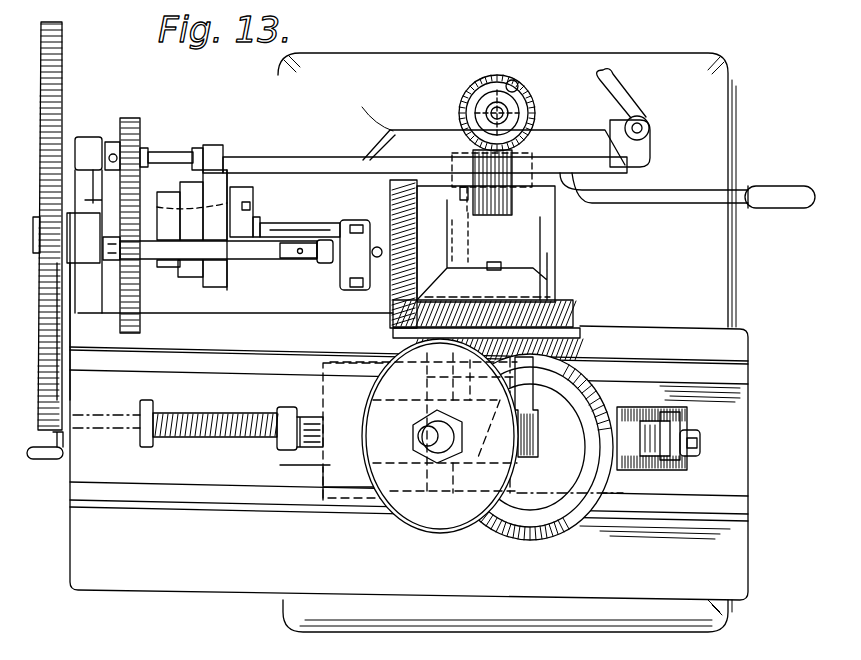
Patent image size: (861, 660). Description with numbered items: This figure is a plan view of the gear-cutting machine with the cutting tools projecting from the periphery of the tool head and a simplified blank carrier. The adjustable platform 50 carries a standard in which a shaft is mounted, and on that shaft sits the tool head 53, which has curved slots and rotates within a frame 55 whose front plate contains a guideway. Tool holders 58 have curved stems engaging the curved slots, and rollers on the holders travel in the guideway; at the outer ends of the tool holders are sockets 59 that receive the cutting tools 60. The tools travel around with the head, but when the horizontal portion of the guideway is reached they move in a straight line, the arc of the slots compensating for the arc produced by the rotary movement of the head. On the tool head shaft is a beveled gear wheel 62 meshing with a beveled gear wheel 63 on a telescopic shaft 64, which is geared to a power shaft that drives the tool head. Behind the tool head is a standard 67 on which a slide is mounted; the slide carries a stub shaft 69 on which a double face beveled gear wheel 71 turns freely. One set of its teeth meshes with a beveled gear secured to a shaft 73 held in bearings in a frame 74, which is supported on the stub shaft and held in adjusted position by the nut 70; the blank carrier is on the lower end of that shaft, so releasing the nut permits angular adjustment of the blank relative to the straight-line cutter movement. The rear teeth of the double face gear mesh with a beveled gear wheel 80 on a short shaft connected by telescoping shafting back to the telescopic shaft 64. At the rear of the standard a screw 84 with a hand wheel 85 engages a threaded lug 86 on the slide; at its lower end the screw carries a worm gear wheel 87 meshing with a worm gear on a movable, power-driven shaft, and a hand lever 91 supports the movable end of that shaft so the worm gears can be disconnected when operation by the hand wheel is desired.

The adjustable platform 50 is at (732, 482).
The tool head 53 is at (330, 417).
The frame 55 is at (312, 450).
The tool holders 58 is at (667, 467).
The sockets 59 is at (691, 421).
The cutting tools 60 is at (700, 442).
The beveled gear wheel 62 is at (530, 277).
The beveled gear wheel 63 is at (500, 222).
The telescopic shaft 64 is at (310, 243).
The standard 67 is at (417, 140).
The stub shaft 69 is at (494, 268).
The nut 70 is at (500, 448).
The double face beveled gear wheel 71 is at (567, 317).
The shaft 73 is at (422, 423).
The frame 74 is at (582, 343).
The beveled gear wheel 80 is at (393, 288).
The screw 84 is at (504, 113).
The hand wheel 85 is at (515, 83).
The threaded lug 86 is at (492, 73).
The worm gear wheel 87 is at (463, 99).
The hand lever 91 is at (663, 200).